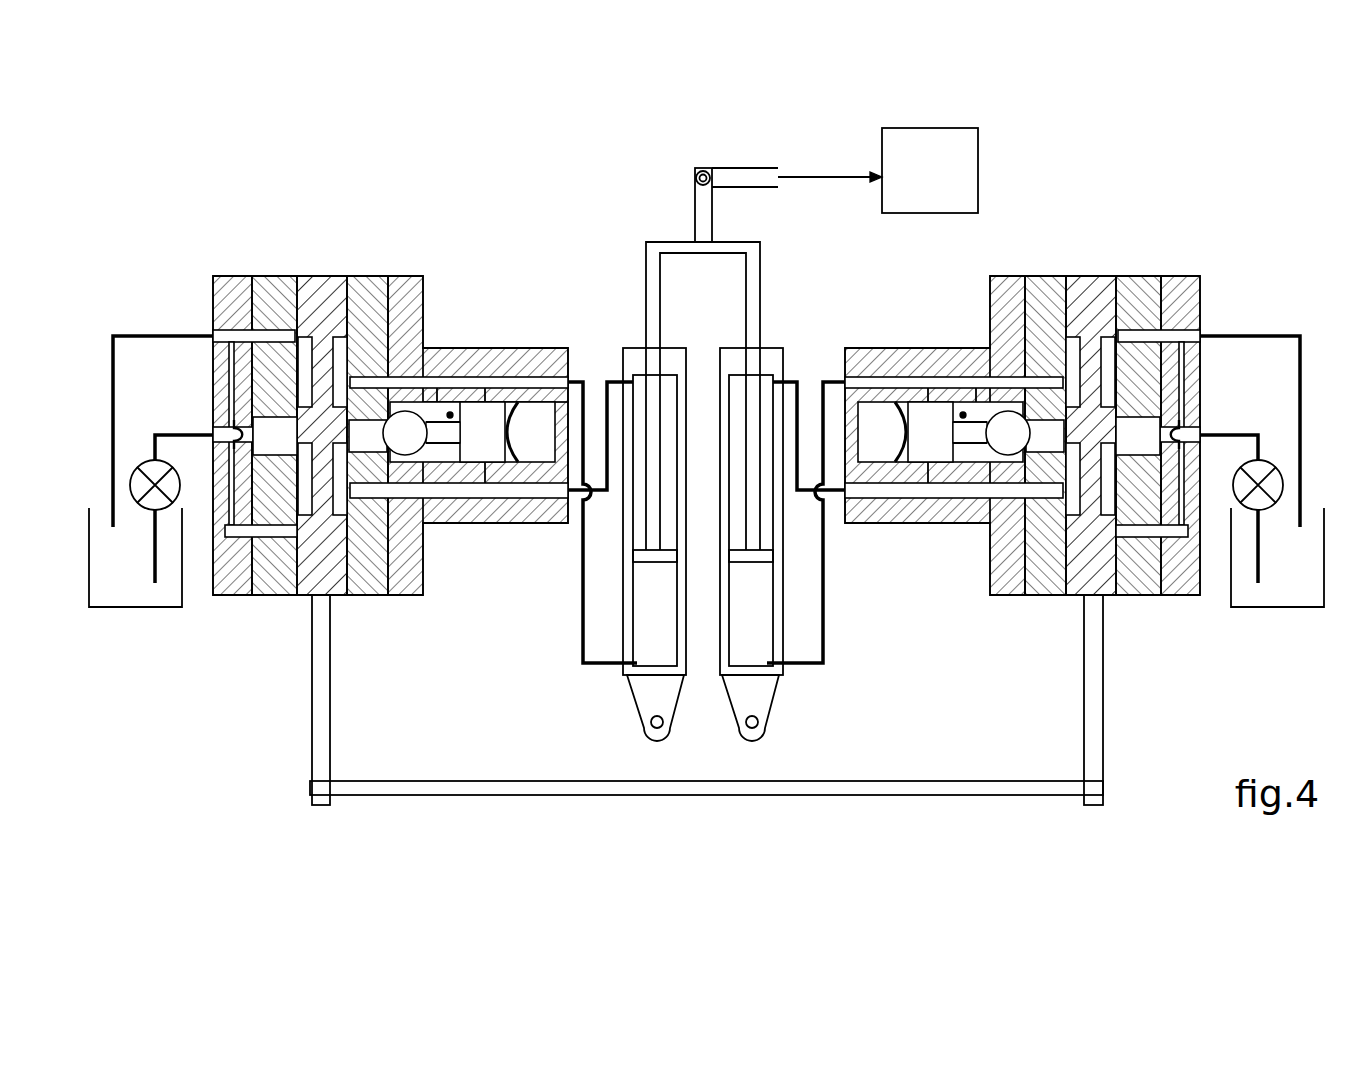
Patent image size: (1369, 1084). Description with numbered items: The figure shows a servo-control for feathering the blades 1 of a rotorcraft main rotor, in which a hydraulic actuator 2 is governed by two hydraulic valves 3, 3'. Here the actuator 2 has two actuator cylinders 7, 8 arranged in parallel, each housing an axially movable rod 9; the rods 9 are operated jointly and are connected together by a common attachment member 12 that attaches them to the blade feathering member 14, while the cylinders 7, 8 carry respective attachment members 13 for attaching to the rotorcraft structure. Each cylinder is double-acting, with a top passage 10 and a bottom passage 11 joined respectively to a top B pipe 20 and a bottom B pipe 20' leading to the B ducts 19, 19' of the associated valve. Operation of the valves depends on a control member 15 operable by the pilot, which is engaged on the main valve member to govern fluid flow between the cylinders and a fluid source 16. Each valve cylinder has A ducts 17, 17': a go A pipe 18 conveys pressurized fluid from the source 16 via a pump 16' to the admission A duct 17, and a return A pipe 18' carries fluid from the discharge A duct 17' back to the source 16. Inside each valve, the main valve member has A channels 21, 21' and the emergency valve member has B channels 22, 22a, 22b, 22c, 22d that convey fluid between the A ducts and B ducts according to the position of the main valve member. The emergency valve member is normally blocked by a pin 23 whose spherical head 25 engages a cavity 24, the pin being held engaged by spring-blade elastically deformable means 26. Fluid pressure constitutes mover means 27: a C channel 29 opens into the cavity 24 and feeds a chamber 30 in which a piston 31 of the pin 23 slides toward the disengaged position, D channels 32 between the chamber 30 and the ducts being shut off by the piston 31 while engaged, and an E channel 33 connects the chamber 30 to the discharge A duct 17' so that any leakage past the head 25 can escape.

The blades 1 is at (922, 181).
The hydraulic actuator 2 is at (625, 238).
The hydraulic valve 3 is at (353, 491).
The hydraulic valve 3' is at (1039, 483).
The actuator cylinder 7 is at (648, 633).
The actuator cylinder 8 is at (745, 633).
The rod 9 is at (661, 302).
The top passage 10 is at (633, 380).
The bottom passage 11 is at (633, 663).
The common attachment member 12 is at (713, 212).
The attachment member 13 is at (645, 711).
The blade feathering member 14 is at (745, 168).
The control member 15 is at (848, 780).
The fluid source 16 is at (135, 557).
The pump 16' is at (151, 452).
The admission A duct 17 is at (207, 415).
The discharge A duct 17' is at (202, 436).
The go A pipe 18 is at (184, 509).
The return A pipe 18' is at (143, 431).
The B duct 19 is at (495, 484).
The B duct 19' is at (495, 354).
The top B pipe 20 is at (600, 474).
The bottom B pipe 20' is at (555, 522).
The A channel 21 is at (317, 417).
The A channel 21' is at (367, 457).
The B channel 22 is at (263, 446).
The B channel 22a is at (277, 328).
The B channel 22b is at (278, 596).
The B channel 22c is at (372, 375).
The B channel 22d is at (387, 523).
The pin 23 is at (440, 450).
The cavity 24 is at (398, 402).
The head 25 is at (393, 446).
The elastically deformable means 26 is at (510, 436).
The mover means 27 is at (353, 446).
The C channel 29 is at (408, 596).
The chamber 30 is at (465, 400).
The piston 31 is at (473, 446).
The D channels 32 is at (487, 478).
The E channel 33 is at (450, 412).